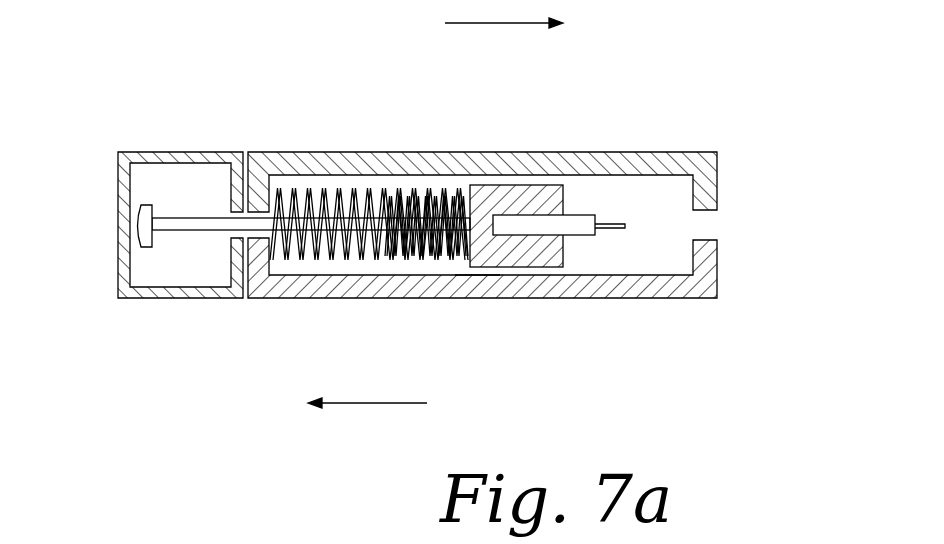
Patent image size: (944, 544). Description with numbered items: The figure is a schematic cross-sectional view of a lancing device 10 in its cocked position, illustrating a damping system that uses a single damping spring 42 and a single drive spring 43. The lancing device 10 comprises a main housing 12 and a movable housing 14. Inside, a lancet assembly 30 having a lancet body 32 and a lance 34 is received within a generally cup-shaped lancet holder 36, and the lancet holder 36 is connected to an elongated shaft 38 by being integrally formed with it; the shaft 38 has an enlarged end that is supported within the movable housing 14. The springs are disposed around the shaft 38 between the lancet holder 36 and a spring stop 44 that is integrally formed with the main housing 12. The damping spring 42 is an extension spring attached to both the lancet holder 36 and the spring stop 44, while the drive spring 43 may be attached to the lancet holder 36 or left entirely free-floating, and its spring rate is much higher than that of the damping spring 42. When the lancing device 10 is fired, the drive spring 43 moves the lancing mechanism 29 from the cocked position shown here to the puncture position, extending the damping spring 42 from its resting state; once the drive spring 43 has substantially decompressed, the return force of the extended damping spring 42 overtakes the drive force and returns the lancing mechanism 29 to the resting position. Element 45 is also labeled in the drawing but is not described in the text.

The lancing device 10 is at (735, 93).
The main housing 12 is at (527, 298).
The movable housing 14 is at (118, 177).
The lancing mechanism 29 is at (478, 273).
The lancet assembly 30 is at (573, 247).
The lancet body 32 is at (585, 215).
The lance 34 is at (598, 224).
The lancet holder 36 is at (547, 185).
The shaft 38 is at (178, 224).
The damping spring 42 is at (293, 193).
The drive spring 43 is at (347, 197).
The spring stop 44 is at (265, 212).
The inner spring 45 is at (417, 197).